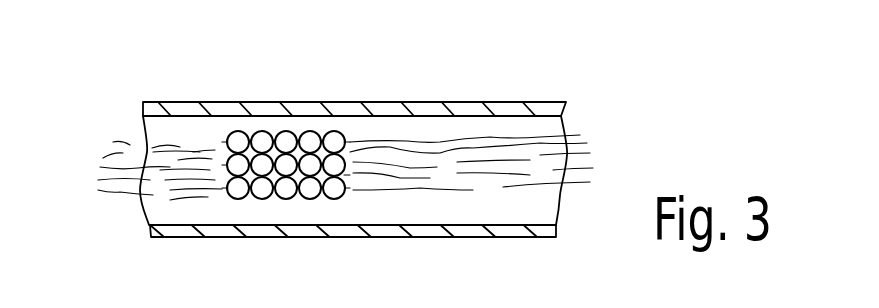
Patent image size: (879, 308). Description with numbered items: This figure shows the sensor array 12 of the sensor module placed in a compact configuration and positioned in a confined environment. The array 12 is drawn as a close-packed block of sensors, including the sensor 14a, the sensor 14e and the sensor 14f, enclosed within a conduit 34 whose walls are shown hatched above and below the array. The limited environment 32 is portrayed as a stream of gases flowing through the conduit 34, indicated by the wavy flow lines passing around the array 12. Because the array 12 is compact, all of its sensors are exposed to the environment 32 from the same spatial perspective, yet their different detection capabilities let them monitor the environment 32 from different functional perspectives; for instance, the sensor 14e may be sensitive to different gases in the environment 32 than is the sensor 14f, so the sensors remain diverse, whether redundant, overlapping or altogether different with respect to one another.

The sensor array 12 is at (278, 165).
The sensor 14a is at (240, 186).
The sensor 14e is at (307, 142).
The sensor 14f is at (310, 163).
The limited environment 32 is at (108, 158).
The conduit 34 is at (507, 104).